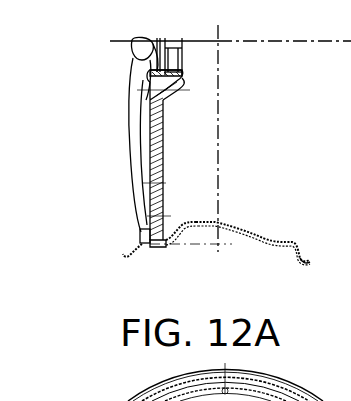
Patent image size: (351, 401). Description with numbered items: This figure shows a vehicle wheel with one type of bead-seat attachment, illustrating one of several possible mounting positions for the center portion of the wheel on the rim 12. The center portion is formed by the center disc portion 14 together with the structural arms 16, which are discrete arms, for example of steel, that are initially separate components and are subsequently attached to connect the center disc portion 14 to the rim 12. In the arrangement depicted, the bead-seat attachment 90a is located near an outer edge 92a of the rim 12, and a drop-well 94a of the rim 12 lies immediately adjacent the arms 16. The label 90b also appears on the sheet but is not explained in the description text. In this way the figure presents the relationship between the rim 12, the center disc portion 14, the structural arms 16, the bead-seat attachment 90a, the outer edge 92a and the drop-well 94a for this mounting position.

The center disc portion 14 is at (126, 76).
The structural arms 16 is at (155, 172).
The bead-seat attachment 90a is at (139, 235).
The outer edge 92a is at (150, 244).
The drop-well 94a is at (192, 218).
The rim 12 is at (263, 242).
The right hook end 90b is at (325, 240).